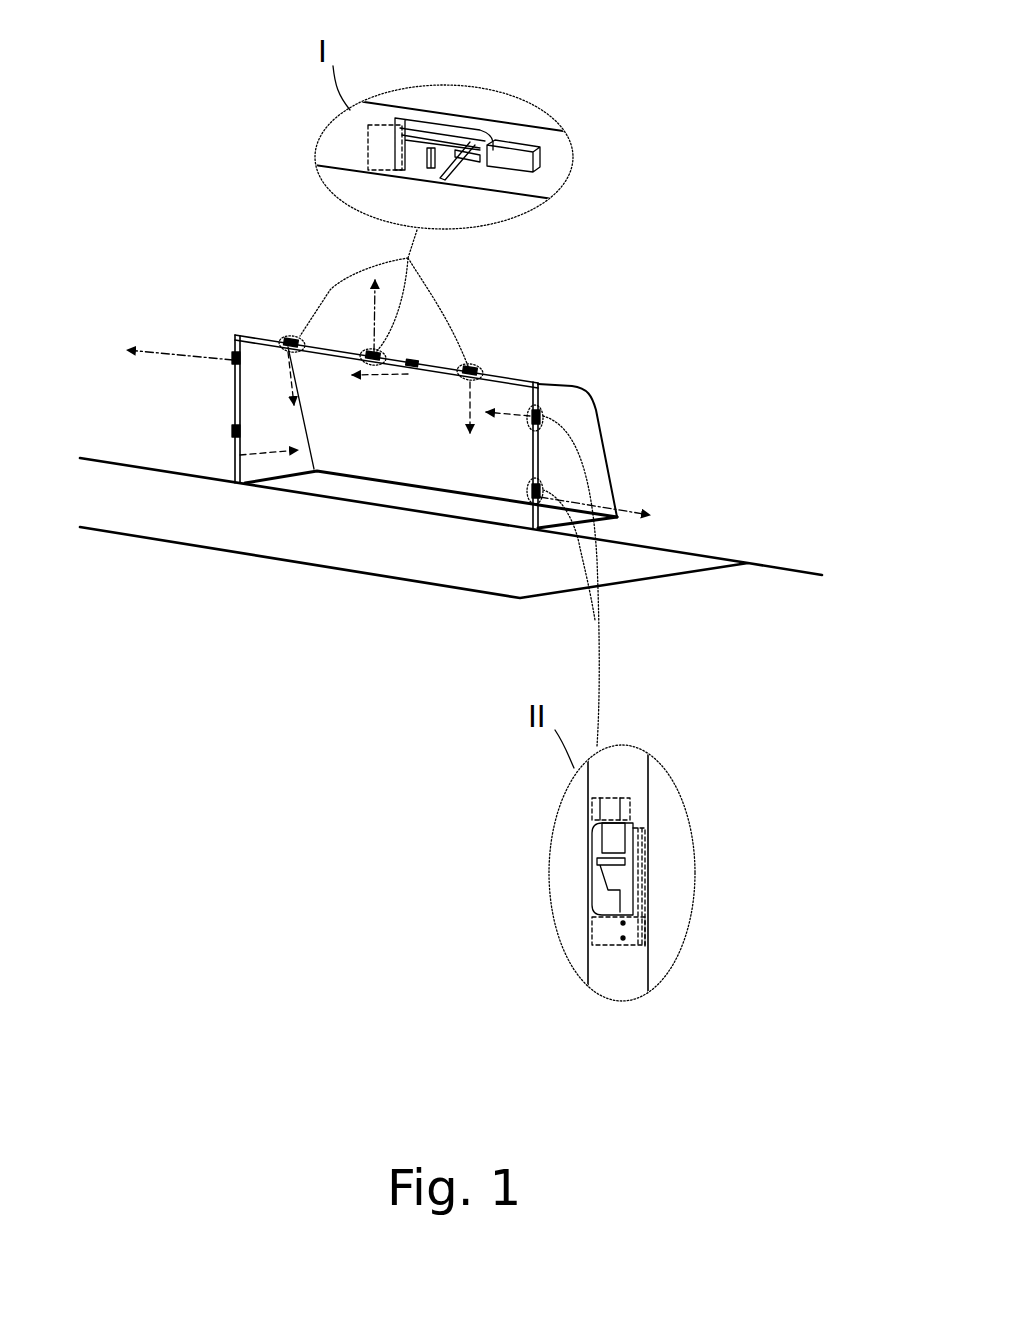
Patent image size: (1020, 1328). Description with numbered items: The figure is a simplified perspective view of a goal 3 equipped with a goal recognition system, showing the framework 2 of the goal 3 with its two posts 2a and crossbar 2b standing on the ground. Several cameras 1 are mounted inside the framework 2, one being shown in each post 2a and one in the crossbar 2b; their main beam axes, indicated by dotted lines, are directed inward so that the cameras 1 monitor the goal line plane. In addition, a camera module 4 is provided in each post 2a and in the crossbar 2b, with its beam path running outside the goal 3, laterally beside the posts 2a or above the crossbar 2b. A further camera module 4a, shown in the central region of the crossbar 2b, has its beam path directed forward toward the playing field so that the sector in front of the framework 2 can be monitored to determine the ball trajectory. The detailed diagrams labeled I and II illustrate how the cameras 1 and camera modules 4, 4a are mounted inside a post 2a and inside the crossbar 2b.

The camera 1 is at (291, 340).
The framework 2 is at (427, 392).
The post 2a is at (233, 463).
The crossbar 2b is at (344, 352).
The goal 3 is at (228, 270).
The camera module 4 is at (234, 358).
The camera module 4a is at (418, 363).